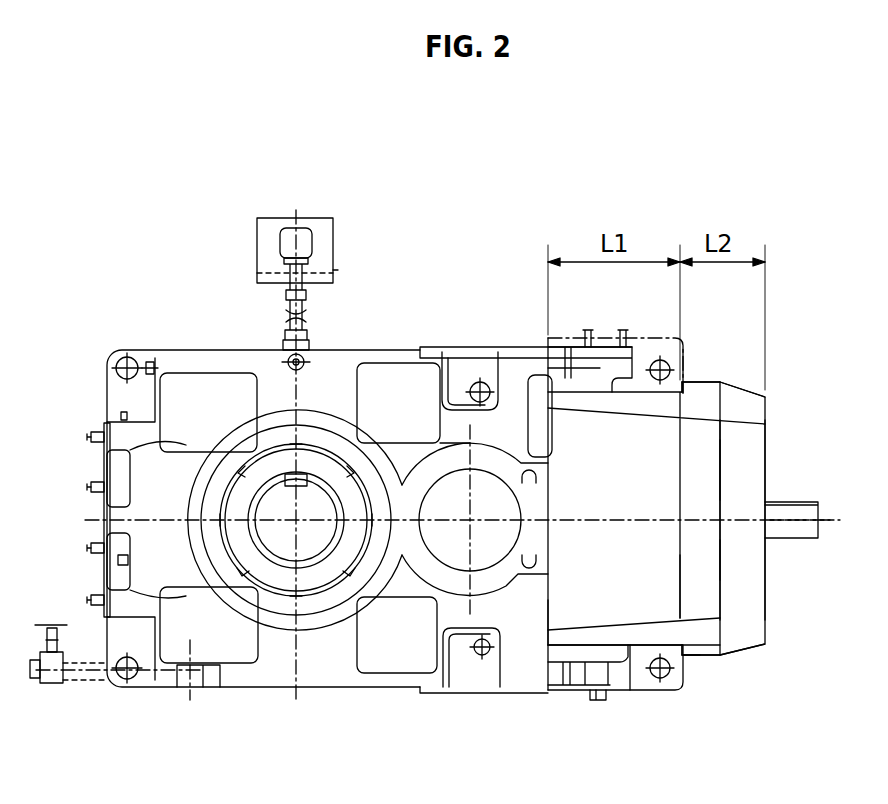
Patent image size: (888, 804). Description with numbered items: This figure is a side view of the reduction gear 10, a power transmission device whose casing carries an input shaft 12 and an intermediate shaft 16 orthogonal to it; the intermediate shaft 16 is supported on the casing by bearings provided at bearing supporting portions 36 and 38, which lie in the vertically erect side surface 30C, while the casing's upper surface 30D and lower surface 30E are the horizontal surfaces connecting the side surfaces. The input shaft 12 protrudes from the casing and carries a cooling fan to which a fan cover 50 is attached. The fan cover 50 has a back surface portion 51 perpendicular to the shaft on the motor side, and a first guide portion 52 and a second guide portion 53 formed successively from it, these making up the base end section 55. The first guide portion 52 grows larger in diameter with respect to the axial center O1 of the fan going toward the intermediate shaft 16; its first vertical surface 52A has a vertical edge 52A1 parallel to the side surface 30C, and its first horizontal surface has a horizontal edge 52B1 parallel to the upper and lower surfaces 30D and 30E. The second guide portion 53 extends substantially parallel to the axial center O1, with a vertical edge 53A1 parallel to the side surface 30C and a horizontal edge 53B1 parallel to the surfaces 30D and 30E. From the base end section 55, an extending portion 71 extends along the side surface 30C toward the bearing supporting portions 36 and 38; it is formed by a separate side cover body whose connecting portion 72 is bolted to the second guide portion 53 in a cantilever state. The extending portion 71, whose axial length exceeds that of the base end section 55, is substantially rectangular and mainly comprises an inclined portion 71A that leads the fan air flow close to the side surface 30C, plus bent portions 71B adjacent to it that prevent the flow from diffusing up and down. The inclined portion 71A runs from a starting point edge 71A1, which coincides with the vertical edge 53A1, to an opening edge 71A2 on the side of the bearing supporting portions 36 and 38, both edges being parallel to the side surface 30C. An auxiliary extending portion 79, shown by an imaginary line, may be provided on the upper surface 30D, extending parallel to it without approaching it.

The reduction gear 10 is at (790, 243).
The input shaft 12 is at (790, 510).
The intermediate shaft 16 is at (480, 540).
The side surface 30C is at (352, 400).
The upper surface 30D is at (405, 350).
The lower surface 30E is at (320, 689).
The bearing supporting portion 36 is at (448, 544).
The bearing supporting portion 38 is at (446, 606).
The fan cover 50 is at (770, 405).
The back surface portion 51 is at (768, 441).
The first guide portion 52 is at (745, 388).
The first vertical surface 52A is at (746, 466).
The vertical edge 52A1 is at (722, 556).
The horizontal edge 52B1 is at (725, 657).
The second guide portion 53 is at (700, 380).
The vertical edge 53A1 is at (668, 685).
The horizontal edge 53B1 is at (684, 656).
The base end section 55 is at (752, 325).
The extending portion 71 is at (642, 650).
The inclined portion 71A is at (640, 556).
The starting point edge 71A1 is at (676, 556).
The opening edge 71A2 is at (545, 606).
The bent portion 71B is at (593, 400).
The connecting portion 72 is at (706, 588).
The auxiliary extending portion 79 is at (661, 366).
The axial center O1 is at (836, 520).